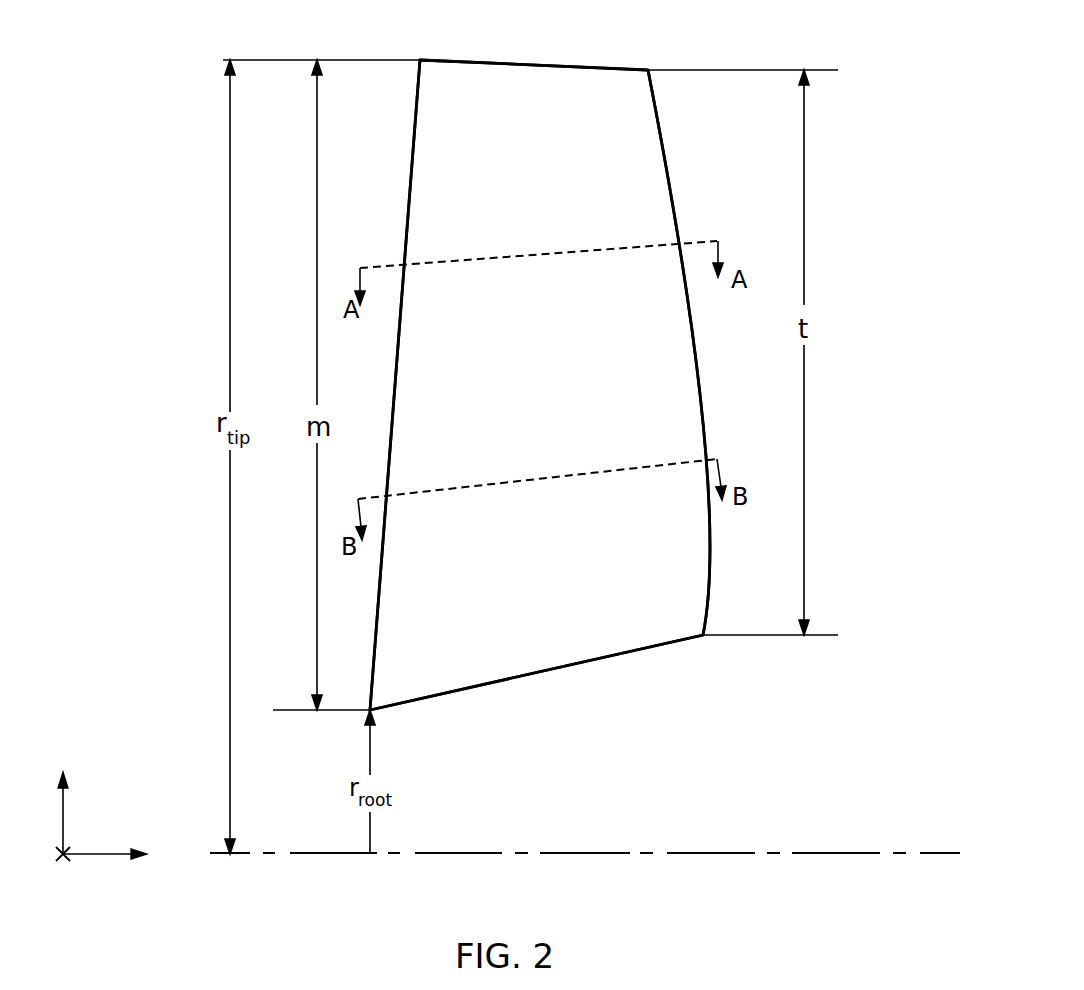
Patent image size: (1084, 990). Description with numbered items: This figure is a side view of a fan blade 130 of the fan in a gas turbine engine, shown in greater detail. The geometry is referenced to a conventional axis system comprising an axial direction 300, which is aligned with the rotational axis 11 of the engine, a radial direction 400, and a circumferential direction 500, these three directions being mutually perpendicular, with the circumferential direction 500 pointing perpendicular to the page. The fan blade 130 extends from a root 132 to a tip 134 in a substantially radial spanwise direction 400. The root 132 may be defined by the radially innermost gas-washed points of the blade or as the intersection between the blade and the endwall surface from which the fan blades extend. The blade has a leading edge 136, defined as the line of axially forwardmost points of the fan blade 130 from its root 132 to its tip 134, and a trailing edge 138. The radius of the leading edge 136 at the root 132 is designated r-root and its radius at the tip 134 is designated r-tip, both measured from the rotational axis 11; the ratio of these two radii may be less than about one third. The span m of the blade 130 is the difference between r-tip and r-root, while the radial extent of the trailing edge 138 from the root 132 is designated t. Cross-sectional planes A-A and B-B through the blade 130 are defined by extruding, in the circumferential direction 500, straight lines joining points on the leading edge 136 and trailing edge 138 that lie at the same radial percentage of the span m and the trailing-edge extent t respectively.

The rotational axis 11 is at (813, 855).
The fan blade 130 is at (632, 155).
The root 132 is at (672, 645).
The tip 134 is at (567, 64).
The leading edge 136 is at (415, 115).
The trailing edge 138 is at (698, 360).
The axial direction 300 is at (132, 853).
The radial direction 400 is at (69, 798).
The circumferential direction 500 is at (69, 868).